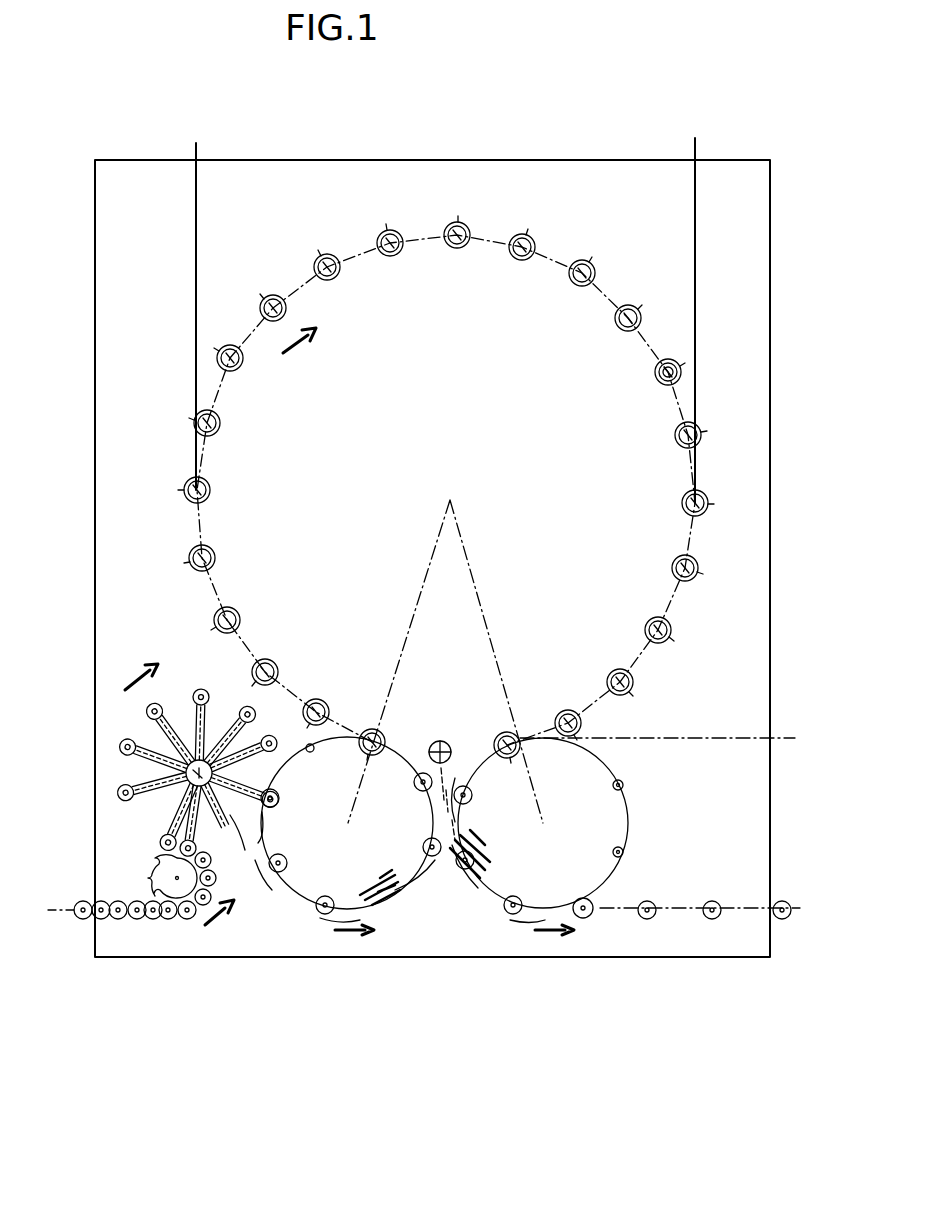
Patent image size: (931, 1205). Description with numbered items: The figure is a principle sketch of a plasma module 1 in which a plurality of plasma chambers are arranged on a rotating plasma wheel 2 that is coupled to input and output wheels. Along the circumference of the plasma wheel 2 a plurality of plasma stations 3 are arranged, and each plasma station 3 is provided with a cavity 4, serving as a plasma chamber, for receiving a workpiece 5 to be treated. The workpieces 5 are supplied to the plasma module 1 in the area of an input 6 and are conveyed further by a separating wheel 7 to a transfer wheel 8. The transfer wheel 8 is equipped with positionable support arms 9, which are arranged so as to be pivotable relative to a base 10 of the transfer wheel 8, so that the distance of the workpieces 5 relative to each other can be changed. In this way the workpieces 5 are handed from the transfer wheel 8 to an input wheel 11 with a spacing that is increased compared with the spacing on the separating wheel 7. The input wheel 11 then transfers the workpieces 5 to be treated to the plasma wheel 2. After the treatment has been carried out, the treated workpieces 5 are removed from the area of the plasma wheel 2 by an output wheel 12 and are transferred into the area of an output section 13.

The plasma module 1 is at (488, 180).
The plasma wheel 2 is at (481, 419).
The plasma station 3 is at (629, 305).
The cavity 4 is at (676, 364).
The workpiece 5 is at (681, 379).
The input 6 is at (122, 935).
The separating wheel 7 is at (180, 893).
The transfer wheel 8 is at (213, 803).
The support arm 9 is at (150, 762).
The base 10 is at (152, 792).
The input wheel 11 is at (307, 870).
The output wheel 12 is at (503, 870).
The output section 13 is at (683, 915).